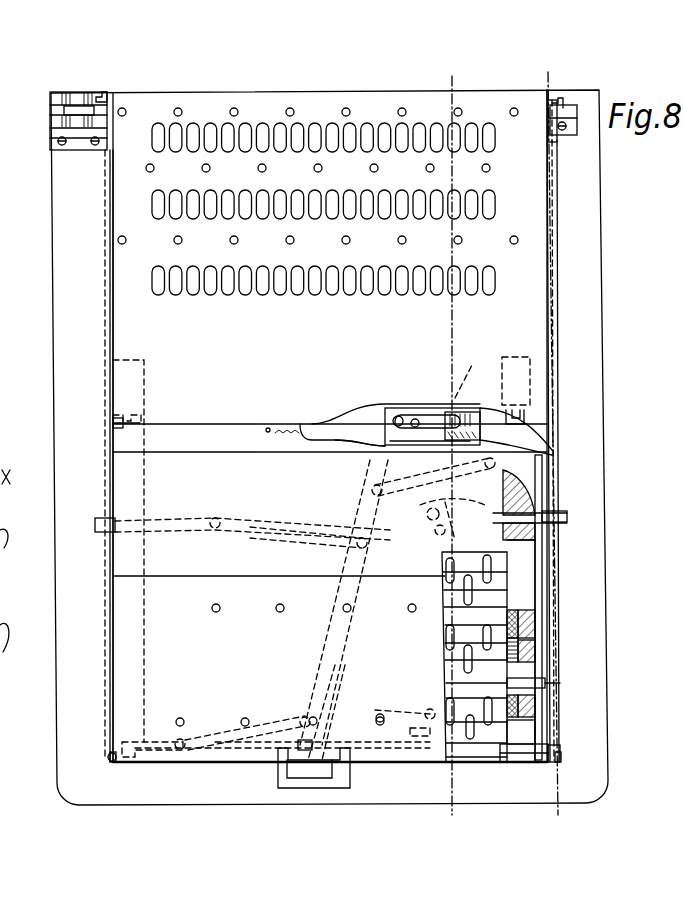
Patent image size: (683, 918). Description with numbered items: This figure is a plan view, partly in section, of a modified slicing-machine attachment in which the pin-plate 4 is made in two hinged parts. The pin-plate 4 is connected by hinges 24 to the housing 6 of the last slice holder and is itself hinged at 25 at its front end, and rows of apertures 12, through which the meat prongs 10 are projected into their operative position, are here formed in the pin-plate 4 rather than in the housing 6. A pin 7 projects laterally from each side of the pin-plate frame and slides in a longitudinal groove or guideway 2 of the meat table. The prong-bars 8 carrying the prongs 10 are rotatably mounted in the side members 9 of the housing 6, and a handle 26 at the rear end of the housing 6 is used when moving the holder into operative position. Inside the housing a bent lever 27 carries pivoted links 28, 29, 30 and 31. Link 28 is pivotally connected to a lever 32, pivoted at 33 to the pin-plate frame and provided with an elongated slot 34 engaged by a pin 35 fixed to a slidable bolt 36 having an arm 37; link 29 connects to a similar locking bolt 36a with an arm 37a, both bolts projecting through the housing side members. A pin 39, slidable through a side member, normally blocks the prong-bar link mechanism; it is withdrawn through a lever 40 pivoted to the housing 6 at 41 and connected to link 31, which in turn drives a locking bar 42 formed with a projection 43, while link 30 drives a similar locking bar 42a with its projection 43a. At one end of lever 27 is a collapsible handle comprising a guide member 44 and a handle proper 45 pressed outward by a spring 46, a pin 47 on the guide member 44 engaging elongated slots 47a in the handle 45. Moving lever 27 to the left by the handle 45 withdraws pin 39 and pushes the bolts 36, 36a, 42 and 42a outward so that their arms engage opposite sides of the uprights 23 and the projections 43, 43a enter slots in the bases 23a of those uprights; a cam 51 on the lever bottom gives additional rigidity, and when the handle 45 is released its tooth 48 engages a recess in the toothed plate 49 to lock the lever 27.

The longitudinal groove or guideway 2 is at (108, 460).
The pin-plate 4 is at (520, 330).
The housing 6 is at (128, 662).
The pin 7 is at (110, 758).
The prong-bars 8 is at (500, 600).
The side members 9 is at (461, 446).
The meat prongs 10 is at (565, 443).
The apertures 12 is at (436, 125).
The uprights 23 is at (80, 112).
The bases of uprights 23a is at (574, 135).
The hinges 24 is at (140, 420).
The hinge 25 is at (107, 95).
The handle 26 is at (350, 788).
The lever 27 is at (330, 615).
The link 28 is at (390, 484).
The link 29 is at (312, 536).
The link 30 is at (240, 724).
The link 31 is at (345, 690).
The lever 32 is at (427, 516).
The pivot 33 is at (435, 532).
The elongated slot 34 is at (452, 540).
The pin 35 is at (430, 540).
The slidable bolt 36 is at (500, 520).
The locking bolt 36a is at (216, 516).
The arm 37 is at (567, 518).
The arm 37a is at (100, 530).
The pin 39 is at (560, 688).
The lever 40 is at (425, 690).
The pivot 41 is at (378, 718).
The locking bar 42 is at (540, 745).
The locking bar 42a is at (172, 742).
The projection 43 is at (560, 750).
The projection 43a is at (112, 762).
The guide member 44 is at (425, 420).
The handle proper 45 is at (470, 410).
The spring 46 is at (550, 448).
The pin 47 is at (372, 443).
The elongated slots 47a is at (455, 404).
The tooth or projection 48 is at (388, 412).
The toothed plate 49 is at (305, 424).
The cam 51 is at (305, 762).